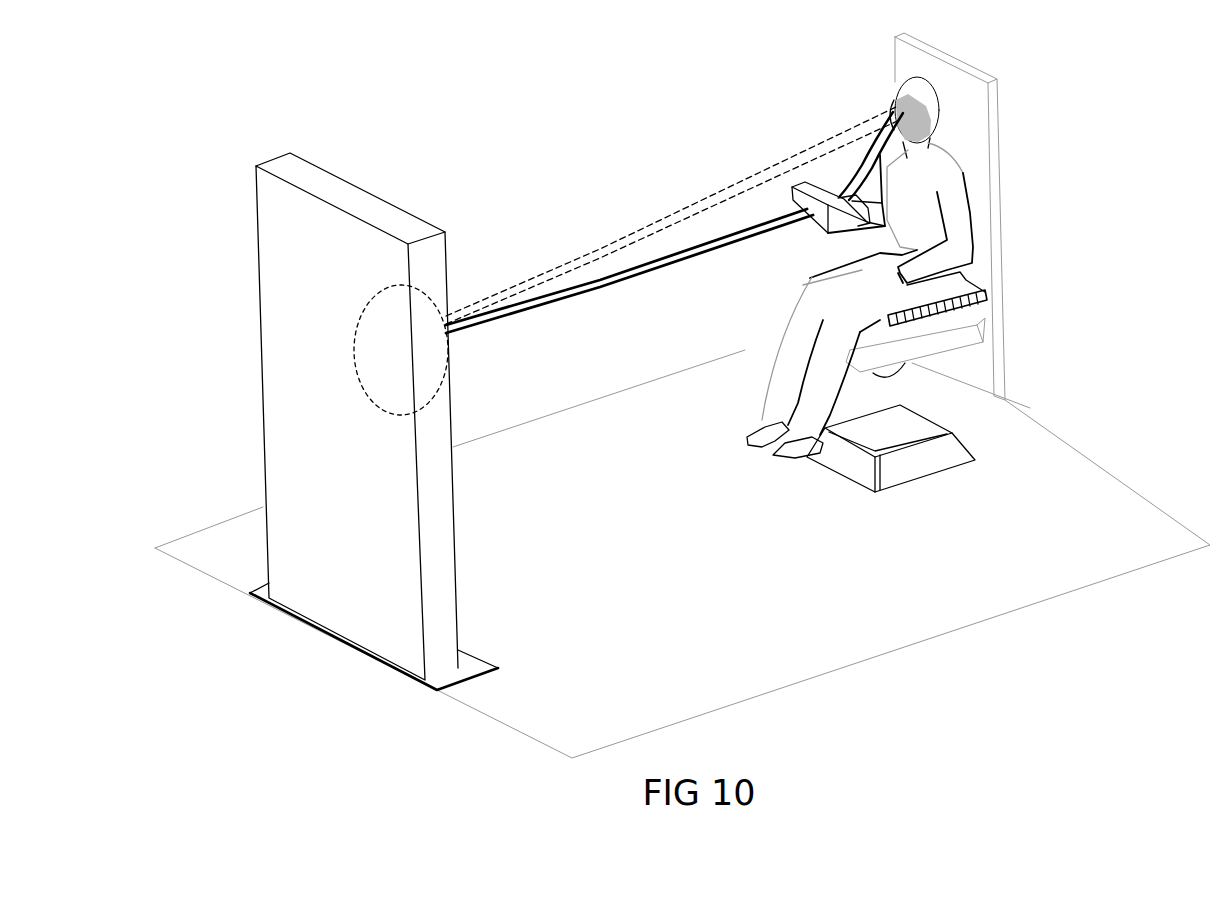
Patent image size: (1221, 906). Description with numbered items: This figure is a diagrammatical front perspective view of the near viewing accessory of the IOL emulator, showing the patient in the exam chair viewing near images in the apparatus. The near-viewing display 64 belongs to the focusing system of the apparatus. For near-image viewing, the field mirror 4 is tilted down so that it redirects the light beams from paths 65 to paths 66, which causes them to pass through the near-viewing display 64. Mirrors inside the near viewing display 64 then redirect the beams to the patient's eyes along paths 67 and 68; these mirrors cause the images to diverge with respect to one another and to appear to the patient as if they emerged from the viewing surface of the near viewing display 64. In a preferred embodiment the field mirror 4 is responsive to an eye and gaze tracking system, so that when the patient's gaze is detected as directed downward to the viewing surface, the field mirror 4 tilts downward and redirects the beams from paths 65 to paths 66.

The field mirror 4 is at (374, 421).
The near-viewing display 64 is at (818, 240).
The beam paths 65 is at (745, 173).
The beam paths 66 is at (710, 260).
The beam path 67 is at (858, 160).
The beam path 68 is at (880, 163).